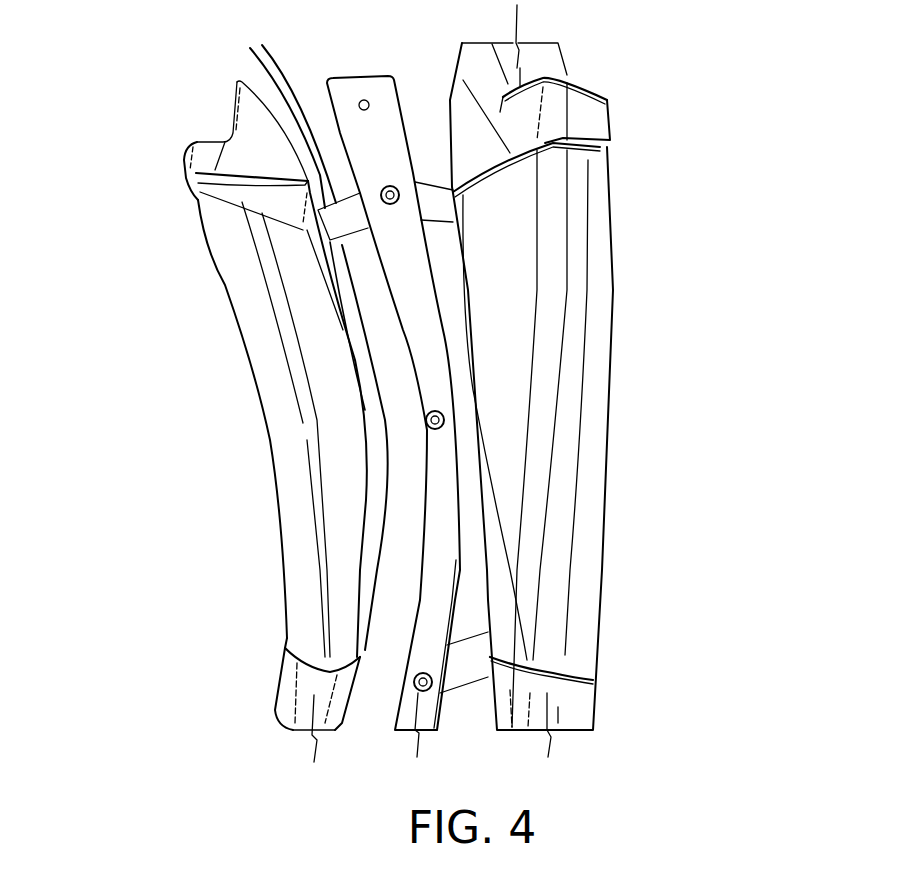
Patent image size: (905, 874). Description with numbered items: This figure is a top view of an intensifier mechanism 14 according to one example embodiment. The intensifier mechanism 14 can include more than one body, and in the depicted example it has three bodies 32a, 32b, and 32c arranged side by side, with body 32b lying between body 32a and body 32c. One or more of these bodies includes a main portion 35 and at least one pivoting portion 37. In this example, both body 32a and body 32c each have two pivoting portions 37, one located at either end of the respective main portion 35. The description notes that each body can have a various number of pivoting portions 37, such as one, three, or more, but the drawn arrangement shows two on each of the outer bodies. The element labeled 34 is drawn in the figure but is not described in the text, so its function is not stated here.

The intensifier mechanism 14 is at (120, 284).
The body 32a is at (655, 617).
The body 32b is at (373, 87).
The body 32c is at (239, 581).
The connecting strap 34 is at (283, 97).
The main portion 35 is at (313, 473).
The pivoting portion 37 is at (195, 157).